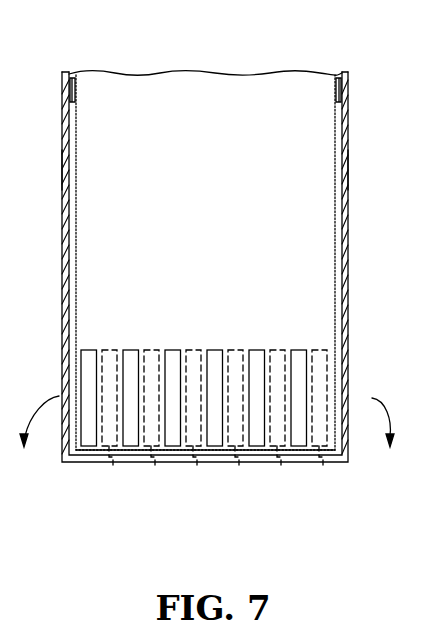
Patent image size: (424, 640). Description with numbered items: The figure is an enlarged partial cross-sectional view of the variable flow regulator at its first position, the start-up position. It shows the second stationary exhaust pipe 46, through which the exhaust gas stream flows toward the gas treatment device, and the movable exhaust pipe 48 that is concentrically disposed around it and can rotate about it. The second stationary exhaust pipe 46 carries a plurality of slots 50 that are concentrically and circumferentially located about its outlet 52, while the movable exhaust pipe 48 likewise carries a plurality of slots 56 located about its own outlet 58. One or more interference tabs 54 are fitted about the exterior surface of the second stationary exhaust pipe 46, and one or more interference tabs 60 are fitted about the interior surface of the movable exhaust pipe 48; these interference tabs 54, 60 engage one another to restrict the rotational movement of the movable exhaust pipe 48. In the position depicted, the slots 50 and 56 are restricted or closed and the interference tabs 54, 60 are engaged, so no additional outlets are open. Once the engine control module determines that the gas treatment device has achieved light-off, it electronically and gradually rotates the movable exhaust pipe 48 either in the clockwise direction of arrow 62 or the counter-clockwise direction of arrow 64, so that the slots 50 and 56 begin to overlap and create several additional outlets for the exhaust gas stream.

The second stationary exhaust pipe 46 is at (78, 242).
The movable exhaust pipe 48 is at (62, 170).
The slots 50 is at (130, 349).
The outlet 52 is at (336, 462).
The interference tabs 54 is at (70, 92).
The slots 56 is at (112, 516).
The outlet 58 is at (260, 462).
The interference tabs 60 is at (73, 78).
The arrow 62 is at (383, 412).
The arrow 64 is at (39, 412).